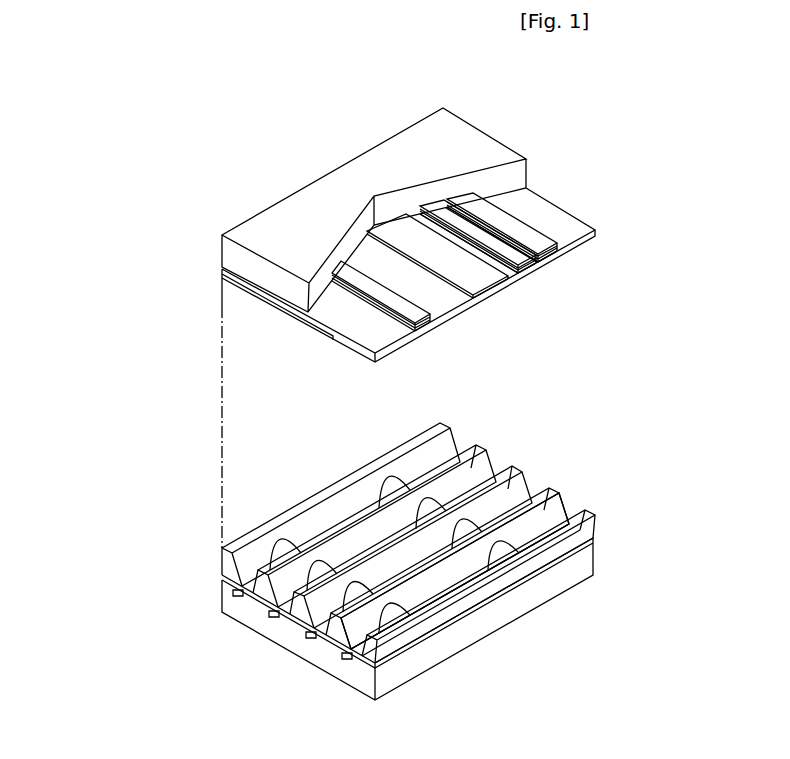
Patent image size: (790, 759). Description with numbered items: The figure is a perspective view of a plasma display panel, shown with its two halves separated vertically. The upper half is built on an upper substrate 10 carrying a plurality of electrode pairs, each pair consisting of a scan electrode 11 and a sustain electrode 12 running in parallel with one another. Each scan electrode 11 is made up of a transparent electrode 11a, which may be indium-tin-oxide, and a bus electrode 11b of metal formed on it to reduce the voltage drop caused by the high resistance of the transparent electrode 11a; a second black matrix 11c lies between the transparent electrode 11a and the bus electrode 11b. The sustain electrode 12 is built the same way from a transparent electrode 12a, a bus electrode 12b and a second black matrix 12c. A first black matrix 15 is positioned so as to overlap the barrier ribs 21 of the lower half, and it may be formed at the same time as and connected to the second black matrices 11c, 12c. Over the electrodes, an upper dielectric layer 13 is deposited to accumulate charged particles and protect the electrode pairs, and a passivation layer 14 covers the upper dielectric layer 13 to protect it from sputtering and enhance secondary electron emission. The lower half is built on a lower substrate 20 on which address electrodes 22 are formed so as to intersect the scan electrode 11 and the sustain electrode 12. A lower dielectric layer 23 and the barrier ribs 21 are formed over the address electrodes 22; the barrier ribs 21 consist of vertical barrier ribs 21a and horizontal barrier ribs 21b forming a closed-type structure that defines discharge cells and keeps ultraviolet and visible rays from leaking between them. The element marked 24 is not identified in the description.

The upper substrate 10 is at (470, 150).
The scan electrode 11 is at (582, 298).
The transparent electrode 11a is at (523, 274).
The bus electrode 11b is at (530, 270).
The second black matrix 11c is at (536, 266).
The sustain electrode 12 is at (636, 230).
The transparent electrode 12a is at (575, 244).
The bus electrode 12b is at (557, 262).
The second black matrix 12c is at (565, 252).
The upper dielectric layer 13 is at (222, 269).
The passivation layer 14 is at (222, 278).
The first black matrix 15 is at (548, 264).
The lower substrate 20 is at (429, 656).
The barrier ribs 21 is at (580, 633).
The vertical barrier ribs 21a is at (518, 568).
The horizontal barrier ribs 21b is at (503, 527).
The address electrodes 22 is at (348, 661).
The lower dielectric layer 23 is at (222, 577).
The side wall 24 is at (593, 545).